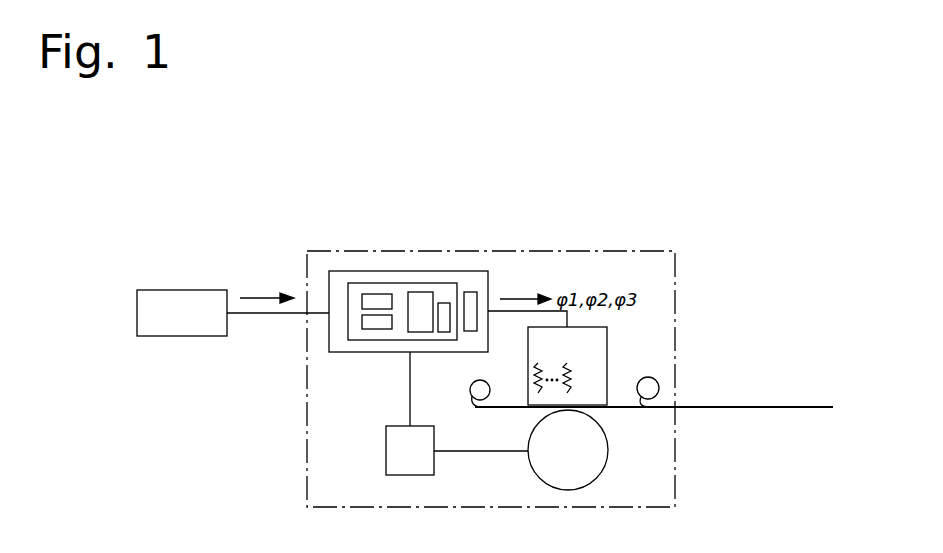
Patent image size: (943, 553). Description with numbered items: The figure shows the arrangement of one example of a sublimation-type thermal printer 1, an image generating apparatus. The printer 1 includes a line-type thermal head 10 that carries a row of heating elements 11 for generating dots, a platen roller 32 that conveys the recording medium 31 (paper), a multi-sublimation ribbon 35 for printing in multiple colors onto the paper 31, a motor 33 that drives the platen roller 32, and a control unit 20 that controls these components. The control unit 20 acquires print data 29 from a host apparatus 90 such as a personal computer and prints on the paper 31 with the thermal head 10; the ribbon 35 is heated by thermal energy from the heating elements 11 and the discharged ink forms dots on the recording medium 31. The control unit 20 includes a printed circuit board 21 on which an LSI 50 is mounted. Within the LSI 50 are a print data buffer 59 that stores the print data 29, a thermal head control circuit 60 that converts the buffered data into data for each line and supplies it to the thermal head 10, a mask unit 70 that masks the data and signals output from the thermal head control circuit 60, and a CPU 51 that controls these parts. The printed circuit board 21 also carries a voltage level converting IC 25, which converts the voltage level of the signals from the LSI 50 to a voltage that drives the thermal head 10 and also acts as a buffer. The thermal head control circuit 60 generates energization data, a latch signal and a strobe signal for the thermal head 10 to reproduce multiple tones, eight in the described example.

The printer 1 is at (648, 244).
The thermal head 10 is at (595, 343).
The heating elements 11 is at (535, 366).
The control unit 20 is at (481, 262).
The printed circuit board 21 is at (484, 299).
The voltage level converting IC 25 is at (472, 307).
The print data 29 is at (244, 297).
The recording medium 31 is at (735, 406).
The platen roller 32 is at (595, 450).
The motor 33 is at (386, 443).
The multi-sublimation ribbon 35 is at (615, 406).
The LSI 50 is at (342, 290).
The CPU 51 is at (372, 297).
The print data buffer 59 is at (368, 325).
The thermal head control circuit 60 is at (422, 298).
The mask unit 70 is at (444, 327).
The host apparatus 90 is at (183, 297).